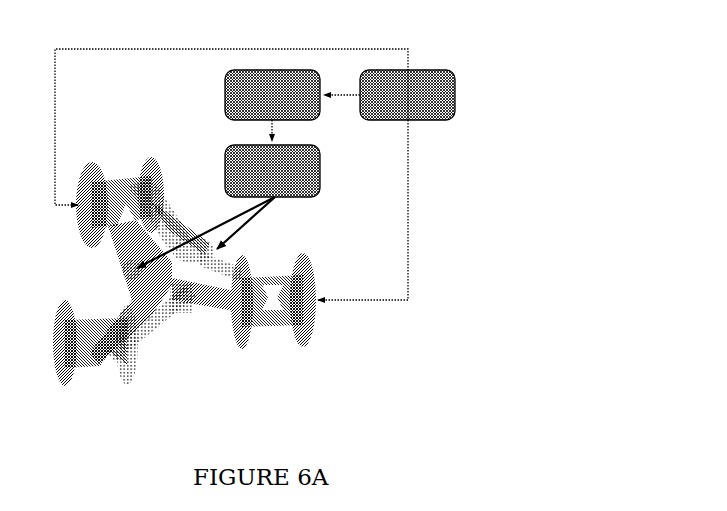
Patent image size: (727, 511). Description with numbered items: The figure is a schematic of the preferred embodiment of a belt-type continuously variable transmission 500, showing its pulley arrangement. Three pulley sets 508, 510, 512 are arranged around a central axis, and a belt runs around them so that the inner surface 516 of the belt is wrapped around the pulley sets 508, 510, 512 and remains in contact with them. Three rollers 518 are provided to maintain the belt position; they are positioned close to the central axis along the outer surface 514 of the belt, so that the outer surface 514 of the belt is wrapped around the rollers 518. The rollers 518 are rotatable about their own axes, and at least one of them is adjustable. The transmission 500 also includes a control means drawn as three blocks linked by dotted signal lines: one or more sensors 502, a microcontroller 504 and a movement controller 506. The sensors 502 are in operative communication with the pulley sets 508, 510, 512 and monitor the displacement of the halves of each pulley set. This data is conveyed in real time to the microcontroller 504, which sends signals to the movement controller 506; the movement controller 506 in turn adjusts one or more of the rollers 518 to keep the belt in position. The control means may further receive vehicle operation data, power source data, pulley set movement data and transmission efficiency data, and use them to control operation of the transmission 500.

The belt-type continuously variable transmission 500 is at (485, 96).
The sensors 502 is at (407, 95).
The microcontroller 504 is at (272, 95).
The movement controller 506 is at (228, 206).
The pulley set 508 is at (124, 161).
The pulley set 510 is at (97, 387).
The pulley set 512 is at (280, 348).
The outer surface of the belt 514 is at (128, 350).
The inner surface of the belt 516 is at (130, 305).
The rollers 518 is at (190, 302).